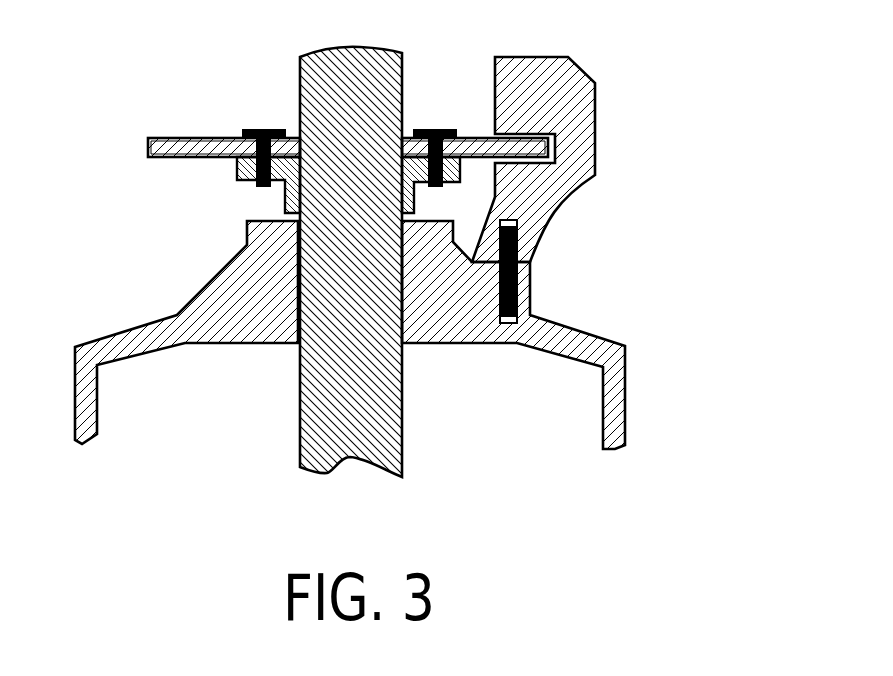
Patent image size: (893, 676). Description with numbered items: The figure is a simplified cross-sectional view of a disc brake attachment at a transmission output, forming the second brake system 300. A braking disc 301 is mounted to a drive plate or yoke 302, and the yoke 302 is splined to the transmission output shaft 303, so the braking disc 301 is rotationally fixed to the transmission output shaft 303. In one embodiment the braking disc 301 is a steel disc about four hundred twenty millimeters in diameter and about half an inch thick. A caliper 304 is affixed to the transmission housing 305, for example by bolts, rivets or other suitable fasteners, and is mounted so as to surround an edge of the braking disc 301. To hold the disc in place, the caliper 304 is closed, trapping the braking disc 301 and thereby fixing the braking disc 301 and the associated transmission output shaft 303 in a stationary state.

The second brake system 300 is at (738, 205).
The braking disc 301 is at (148, 152).
The drive plate or yoke 302 is at (237, 178).
The transmission output shaft 303 is at (300, 93).
The caliper 304 is at (583, 73).
The transmission housing 305 is at (626, 346).